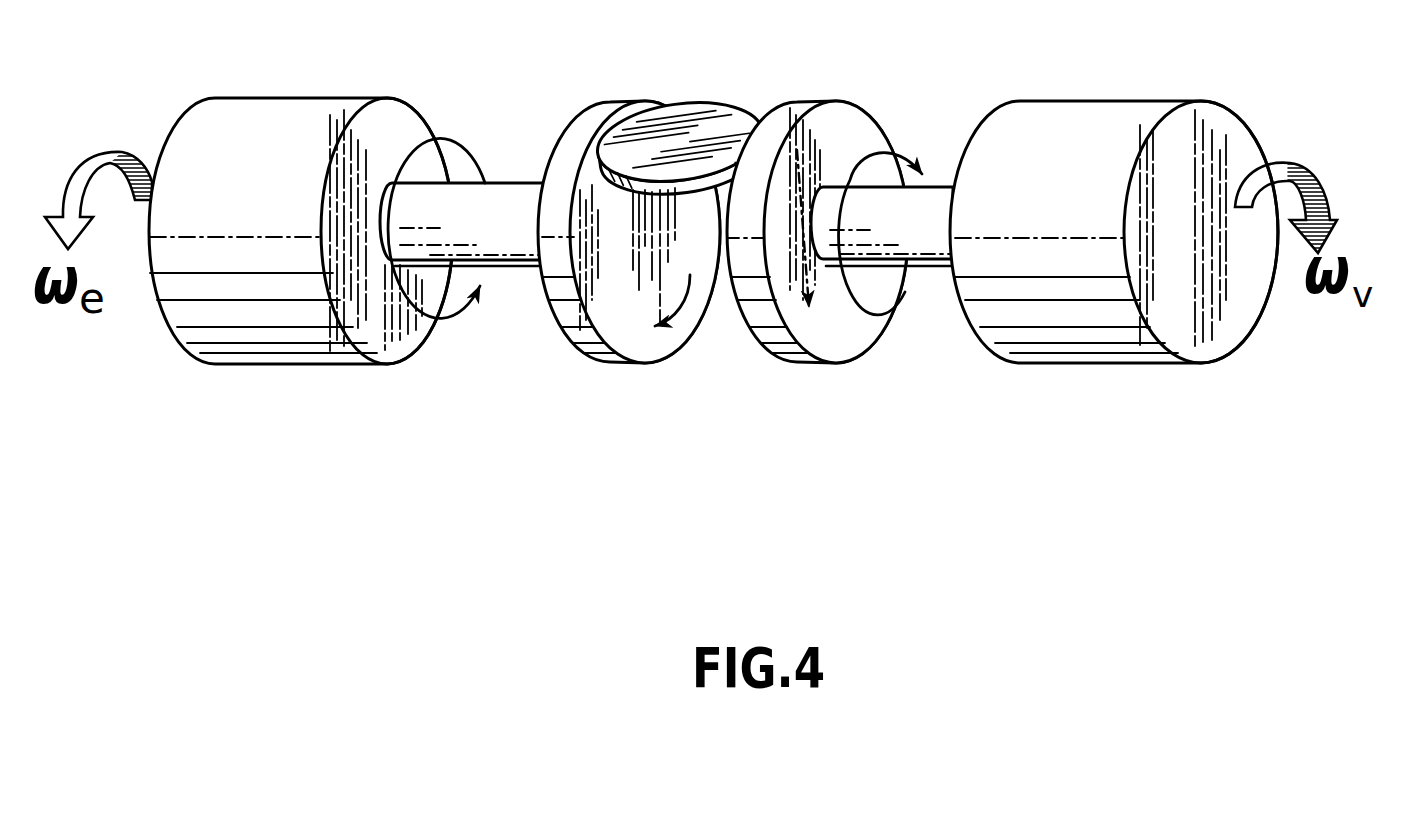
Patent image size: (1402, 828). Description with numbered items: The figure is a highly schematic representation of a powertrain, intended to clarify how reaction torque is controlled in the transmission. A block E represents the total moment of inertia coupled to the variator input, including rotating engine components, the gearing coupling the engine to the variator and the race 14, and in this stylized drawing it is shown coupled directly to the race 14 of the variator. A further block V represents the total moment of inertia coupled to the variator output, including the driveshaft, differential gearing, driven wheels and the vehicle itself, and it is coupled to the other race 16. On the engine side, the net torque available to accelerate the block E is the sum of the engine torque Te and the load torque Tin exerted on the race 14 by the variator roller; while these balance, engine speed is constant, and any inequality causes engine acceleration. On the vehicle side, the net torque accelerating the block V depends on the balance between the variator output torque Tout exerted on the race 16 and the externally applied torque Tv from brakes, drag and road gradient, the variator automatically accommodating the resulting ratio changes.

The race 14 is at (577, 315).
The race 16 is at (770, 315).
The block E is at (217, 185).
The block V is at (1016, 194).
The engine torque Te is at (458, 238).
The load torque Tin is at (648, 300).
The variator output torque Tout is at (832, 246).
The vehicle torque Tv is at (897, 249).